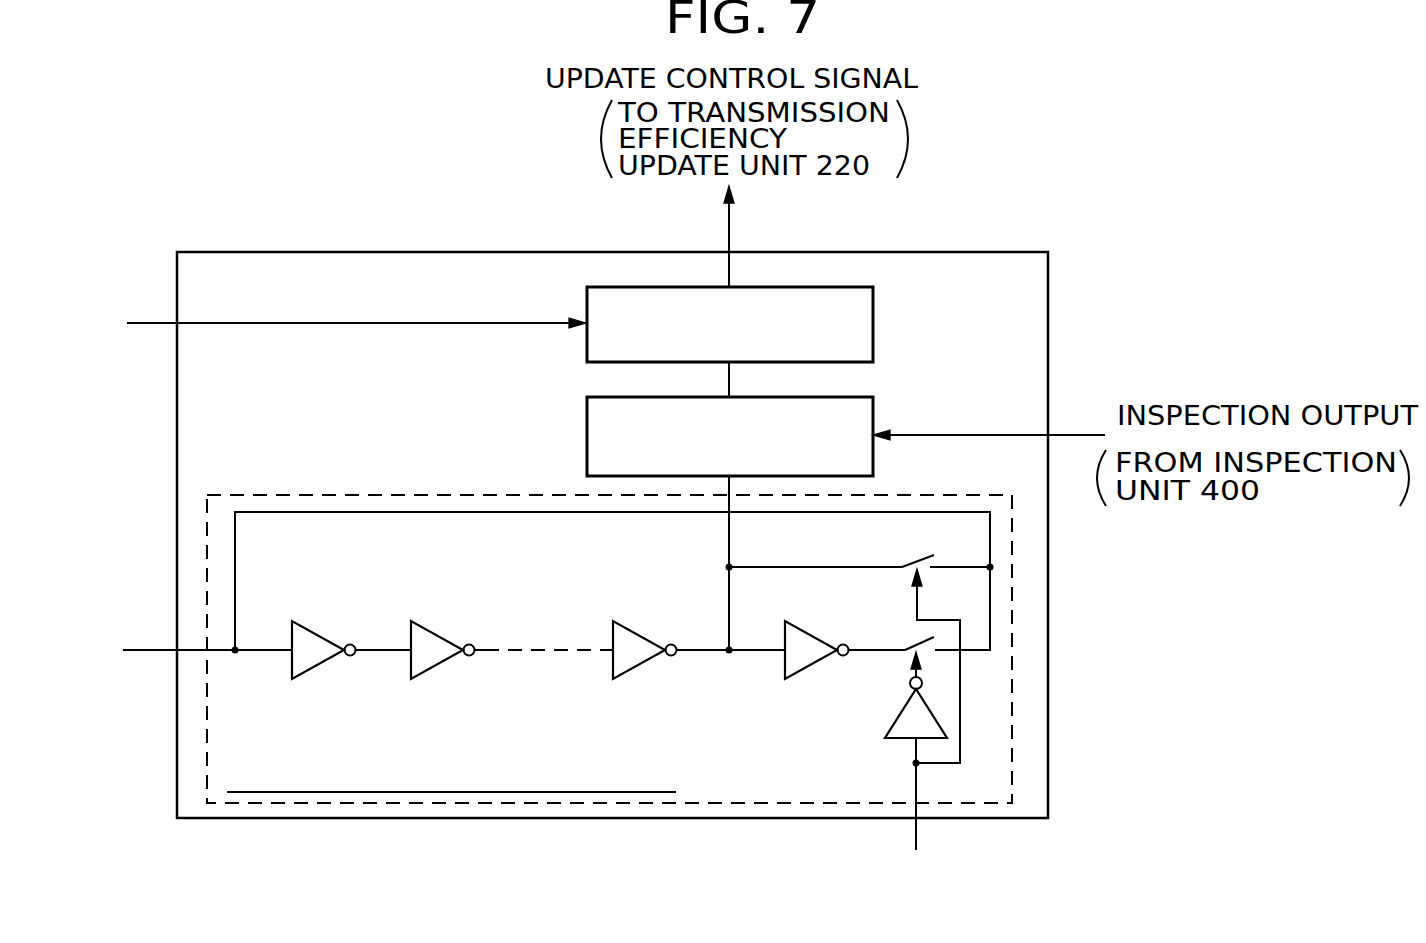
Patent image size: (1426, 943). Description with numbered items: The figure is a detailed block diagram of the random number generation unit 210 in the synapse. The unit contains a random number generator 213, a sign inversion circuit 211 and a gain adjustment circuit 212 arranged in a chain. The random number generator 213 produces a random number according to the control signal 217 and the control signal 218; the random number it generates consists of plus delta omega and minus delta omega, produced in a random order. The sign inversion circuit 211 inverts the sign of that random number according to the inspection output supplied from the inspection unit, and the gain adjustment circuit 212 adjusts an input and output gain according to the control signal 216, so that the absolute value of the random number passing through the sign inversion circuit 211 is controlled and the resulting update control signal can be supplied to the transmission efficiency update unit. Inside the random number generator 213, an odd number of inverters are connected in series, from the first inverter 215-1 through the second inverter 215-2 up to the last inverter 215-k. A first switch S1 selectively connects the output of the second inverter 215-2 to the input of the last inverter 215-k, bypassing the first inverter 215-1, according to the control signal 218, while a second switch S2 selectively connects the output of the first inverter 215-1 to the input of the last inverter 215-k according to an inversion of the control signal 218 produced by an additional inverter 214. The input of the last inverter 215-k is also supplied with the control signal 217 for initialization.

The random number generation unit 210 is at (928, 251).
The sign inversion circuit 211 is at (875, 413).
The gain adjustment circuit 212 is at (875, 317).
The random number generator 213 is at (247, 495).
The additional inverter 214 is at (892, 712).
The last inverter 215-k is at (328, 640).
The second inverter 215-2 is at (643, 633).
The first inverter 215-1 is at (783, 653).
The control signal 216 is at (324, 325).
The control signal 217 is at (176, 652).
The control signal 218 is at (911, 816).
The first switch S1 is at (859, 642).
The second switch S2 is at (900, 643).